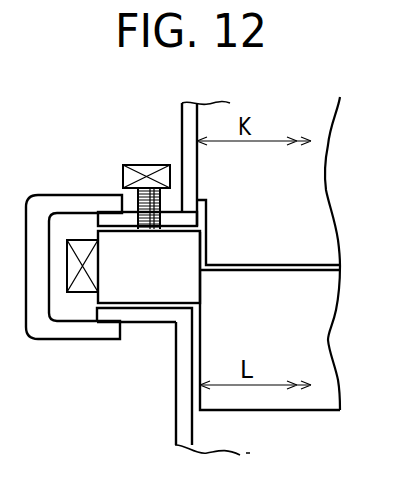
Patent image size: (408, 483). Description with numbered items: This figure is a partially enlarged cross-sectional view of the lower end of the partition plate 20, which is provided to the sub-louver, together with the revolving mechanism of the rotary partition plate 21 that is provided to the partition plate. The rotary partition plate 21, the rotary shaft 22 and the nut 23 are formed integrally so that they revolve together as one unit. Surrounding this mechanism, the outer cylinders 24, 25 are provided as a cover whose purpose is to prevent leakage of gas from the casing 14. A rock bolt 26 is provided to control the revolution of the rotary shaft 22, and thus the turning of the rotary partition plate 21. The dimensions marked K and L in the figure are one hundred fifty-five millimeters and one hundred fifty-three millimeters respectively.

The casing 14 is at (181, 130).
The partition plate 20 is at (298, 195).
The rotary partition plate 21 is at (300, 338).
The rotary shaft 22 is at (137, 283).
The nut 23 is at (77, 238).
The outer cylinder 24 is at (162, 324).
The outer cylinder 25 is at (55, 341).
The rock bolt 26 is at (127, 165).